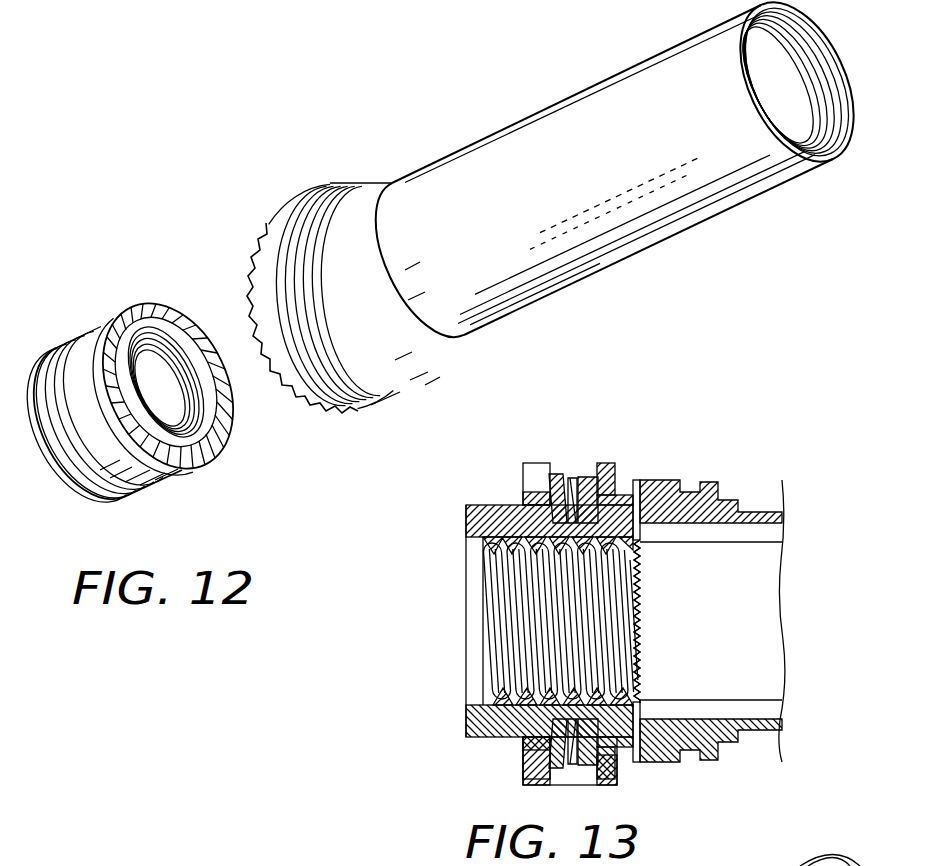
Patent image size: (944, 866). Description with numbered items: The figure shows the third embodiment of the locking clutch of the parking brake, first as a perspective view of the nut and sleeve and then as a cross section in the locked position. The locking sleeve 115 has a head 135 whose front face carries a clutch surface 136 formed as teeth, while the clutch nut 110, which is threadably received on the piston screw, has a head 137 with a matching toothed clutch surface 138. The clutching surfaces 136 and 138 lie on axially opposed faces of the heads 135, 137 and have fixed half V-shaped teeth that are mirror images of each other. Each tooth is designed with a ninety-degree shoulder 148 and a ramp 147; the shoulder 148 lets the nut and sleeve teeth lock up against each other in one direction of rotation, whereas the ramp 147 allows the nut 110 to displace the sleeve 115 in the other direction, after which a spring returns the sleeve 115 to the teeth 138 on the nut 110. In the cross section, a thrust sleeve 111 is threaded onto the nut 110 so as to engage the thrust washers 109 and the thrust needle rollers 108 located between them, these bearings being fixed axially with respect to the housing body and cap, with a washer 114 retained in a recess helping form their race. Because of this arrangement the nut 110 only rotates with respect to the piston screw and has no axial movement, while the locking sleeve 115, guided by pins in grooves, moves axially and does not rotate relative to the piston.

In FIG. 13, the thrust needle rollers 108 is at (558, 752).
In FIG. 13, the thrust washers 109 is at (587, 470).
In FIG. 12, the clutch nut 110 is at (92, 325).
In FIG. 13, the clutch nut 110 is at (636, 482).
In FIG. 13, the thrust sleeve 111 is at (466, 510).
In FIG. 13, the washer 114 is at (603, 460).
In FIG. 12, the locking sleeve 115 is at (445, 177).
In FIG. 13, the locking sleeve 115 is at (738, 500).
In FIG. 12, the head 135 is at (287, 203).
In FIG. 12, the clutch surface 136 is at (265, 223).
In FIG. 13, the clutch surface 136 is at (646, 620).
In FIG. 12, the head 137 is at (105, 320).
In FIG. 12, the clutch surface 138 is at (158, 308).
In FIG. 13, the clutch surface 138 is at (712, 621).
In FIG. 13, the ramp 147 is at (642, 605).
In FIG. 13, the shoulder 148 is at (640, 592).